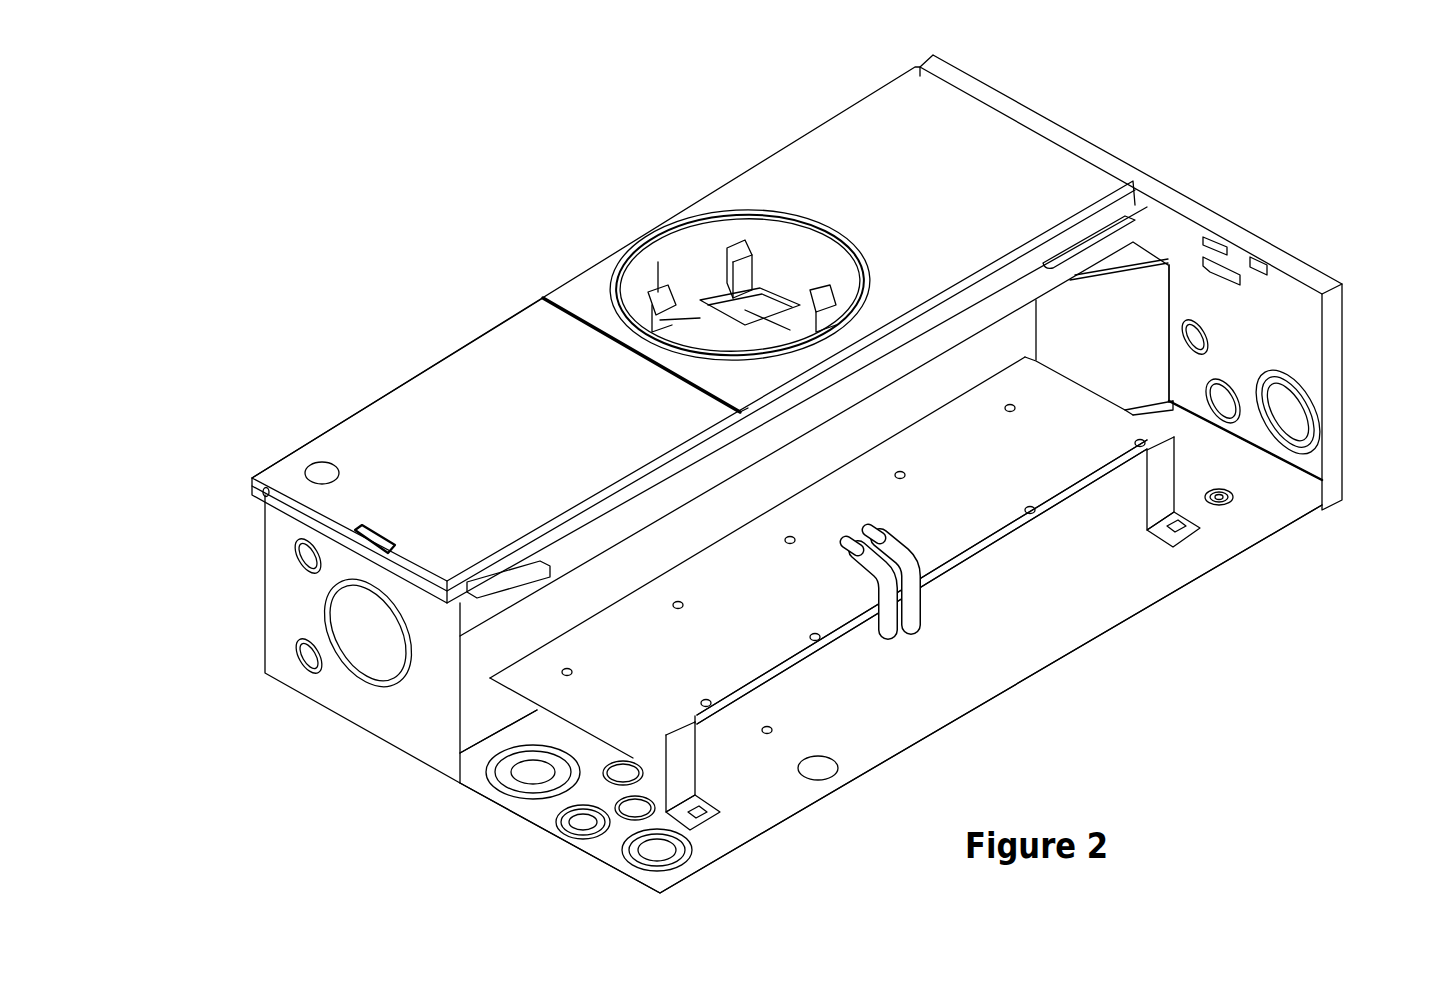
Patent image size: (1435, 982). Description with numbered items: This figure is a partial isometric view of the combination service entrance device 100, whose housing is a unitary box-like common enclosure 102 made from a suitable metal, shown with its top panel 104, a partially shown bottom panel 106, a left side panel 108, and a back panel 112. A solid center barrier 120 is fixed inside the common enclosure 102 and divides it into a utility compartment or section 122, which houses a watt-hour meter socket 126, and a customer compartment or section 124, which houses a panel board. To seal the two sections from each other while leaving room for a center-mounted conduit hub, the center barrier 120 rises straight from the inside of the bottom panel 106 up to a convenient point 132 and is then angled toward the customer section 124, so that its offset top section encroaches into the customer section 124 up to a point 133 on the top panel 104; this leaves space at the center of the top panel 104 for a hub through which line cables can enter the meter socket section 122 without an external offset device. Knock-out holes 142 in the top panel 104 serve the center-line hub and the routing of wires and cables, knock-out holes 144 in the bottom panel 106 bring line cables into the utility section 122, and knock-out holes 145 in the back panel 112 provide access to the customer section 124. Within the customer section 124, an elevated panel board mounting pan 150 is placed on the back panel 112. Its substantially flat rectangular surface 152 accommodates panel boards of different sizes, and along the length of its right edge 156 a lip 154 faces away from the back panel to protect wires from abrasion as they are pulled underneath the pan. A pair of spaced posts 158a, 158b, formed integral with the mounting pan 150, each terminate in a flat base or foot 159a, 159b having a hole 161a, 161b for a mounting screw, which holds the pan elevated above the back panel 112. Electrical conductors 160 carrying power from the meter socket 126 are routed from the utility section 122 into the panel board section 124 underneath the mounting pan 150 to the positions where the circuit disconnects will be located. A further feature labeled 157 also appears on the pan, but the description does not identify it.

The combination service entrance device 100 is at (1178, 712).
The common enclosure 102 is at (777, 152).
The top panel 104 is at (1147, 168).
The bottom panel 106 is at (361, 636).
The left side panel 108 is at (440, 358).
The back panel 112 is at (1272, 505).
The solid center barrier 120 is at (498, 727).
The utility compartment or section 122 is at (590, 295).
The customer compartment or section 124 is at (891, 691).
The watt-hour meter socket 126 is at (758, 258).
The convenient point 132 is at (1028, 347).
The point on top panel 133 is at (1170, 280).
The knock-out holes 142 is at (1283, 422).
The knock-out holes 144 is at (323, 615).
The knock-out holes 145 is at (650, 852).
The elevated panel board mounting pan 150 is at (854, 565).
The flat rectangular surface 152 is at (1094, 573).
The lip 154 is at (963, 557).
The right edge 156 is at (698, 724).
The plate edge 157 is at (797, 660).
The post 158a is at (1175, 450).
The post 158b is at (677, 757).
The flat base or foot 159a is at (1188, 528).
The flat base or foot 159b is at (713, 812).
The electrical conductors 160 is at (911, 620).
The hole 161a is at (1173, 533).
The hole 161b is at (694, 820).